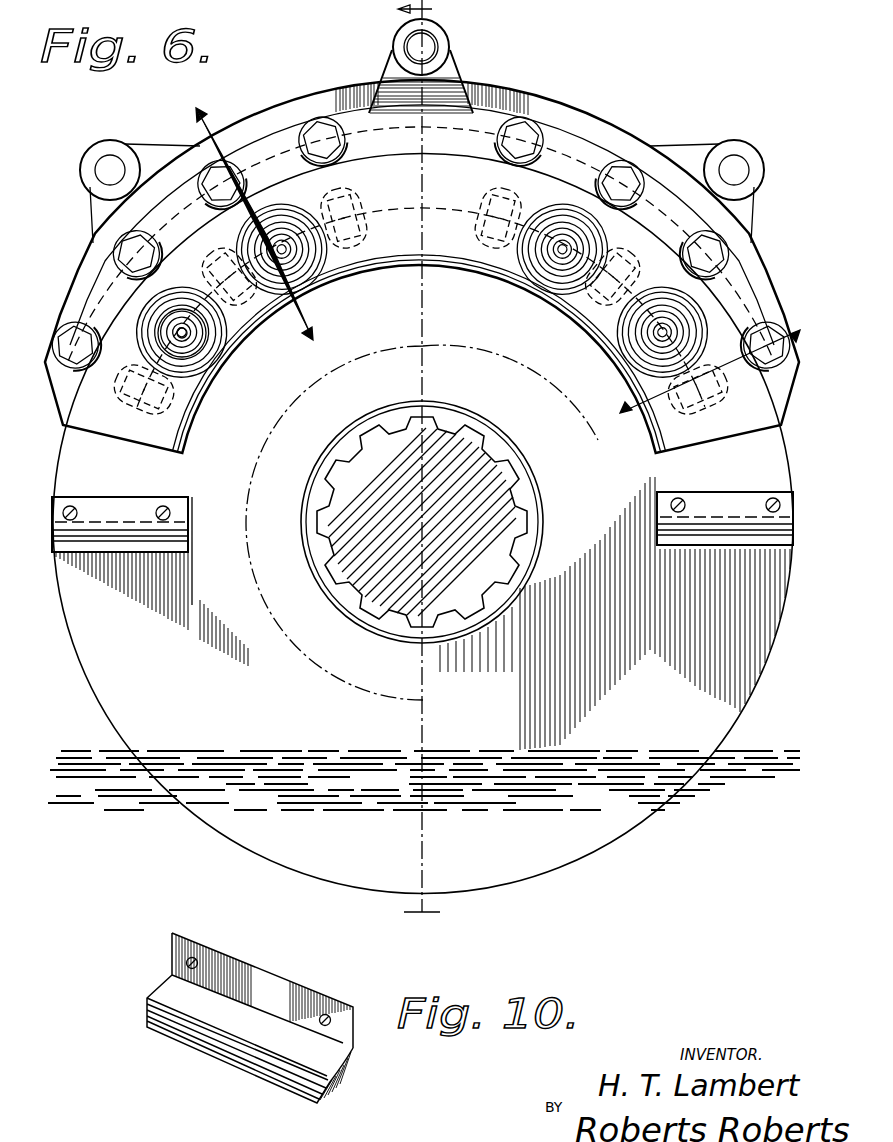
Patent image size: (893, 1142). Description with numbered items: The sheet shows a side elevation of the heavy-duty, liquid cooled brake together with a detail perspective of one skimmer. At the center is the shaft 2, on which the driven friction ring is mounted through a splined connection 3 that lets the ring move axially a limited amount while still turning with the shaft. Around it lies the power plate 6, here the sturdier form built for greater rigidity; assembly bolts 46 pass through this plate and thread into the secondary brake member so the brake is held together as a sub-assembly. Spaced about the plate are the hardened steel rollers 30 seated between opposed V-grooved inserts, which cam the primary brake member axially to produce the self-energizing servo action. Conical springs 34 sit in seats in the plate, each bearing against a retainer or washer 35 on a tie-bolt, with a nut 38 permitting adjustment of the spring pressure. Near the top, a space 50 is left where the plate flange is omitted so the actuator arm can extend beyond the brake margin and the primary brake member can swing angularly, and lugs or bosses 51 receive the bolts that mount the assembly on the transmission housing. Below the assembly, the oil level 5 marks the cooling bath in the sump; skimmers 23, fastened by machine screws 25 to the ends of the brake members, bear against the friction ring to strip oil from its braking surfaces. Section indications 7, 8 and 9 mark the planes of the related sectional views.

In FIG. 6, the shaft 2 is at (512, 545).
In FIG. 6, the splined connection 3 is at (426, 415).
In FIG. 6, the oil level 5 is at (615, 752).
In FIG. 6, the power plate 6 is at (452, 262).
In FIG. 6, the section line 7- 7 is at (428, 473).
In FIG. 6, the section line 8- 8 is at (260, 219).
In FIG. 6, the section line 9- 9 is at (706, 384).
In FIG. 6, the skimmer or brush member 23 is at (190, 540).
In FIG. 10, the skimmer or brush member 23 is at (345, 1064).
In FIG. 6, the machine screws 25 is at (160, 505).
In FIG. 6, the hardened steel roller 30 is at (446, 208).
In FIG. 6, the conical spring 34 is at (318, 278).
In FIG. 6, the retainer or washer 35 is at (197, 331).
In FIG. 6, the nut 38 is at (201, 350).
In FIG. 6, the assembly bolts 46 is at (310, 135).
In FIG. 6, the space 50 is at (500, 100).
In FIG. 6, the lugs or bosses 51 is at (118, 152).